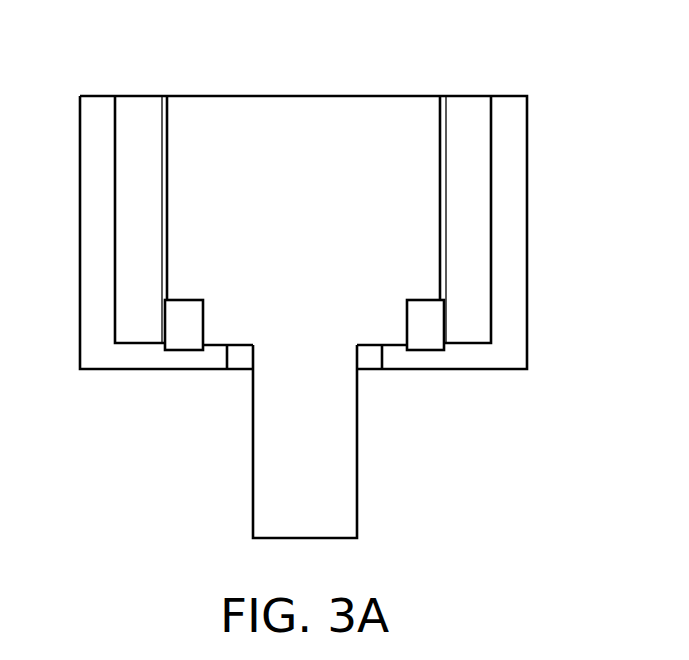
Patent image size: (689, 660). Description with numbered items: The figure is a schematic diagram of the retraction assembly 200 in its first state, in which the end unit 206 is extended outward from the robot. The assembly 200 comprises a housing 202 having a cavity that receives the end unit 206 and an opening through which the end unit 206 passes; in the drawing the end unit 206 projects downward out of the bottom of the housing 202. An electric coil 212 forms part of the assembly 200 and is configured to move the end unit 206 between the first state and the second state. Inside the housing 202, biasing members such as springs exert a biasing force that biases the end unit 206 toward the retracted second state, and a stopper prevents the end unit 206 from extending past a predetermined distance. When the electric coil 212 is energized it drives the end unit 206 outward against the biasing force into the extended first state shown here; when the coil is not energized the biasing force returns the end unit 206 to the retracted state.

The retraction assembly 200 is at (541, 75).
The housing 202 is at (491, 219).
The end unit 206 is at (357, 470).
The electric coil 212 is at (527, 278).